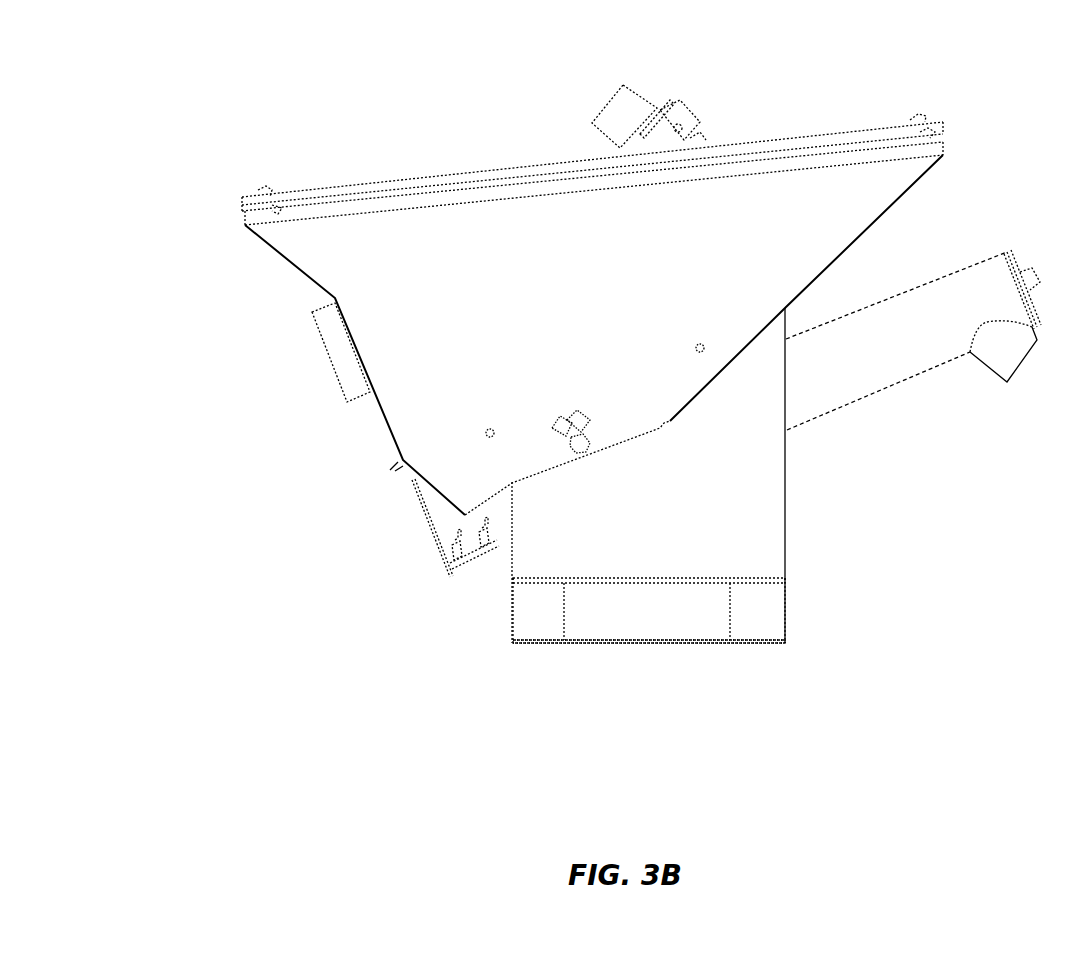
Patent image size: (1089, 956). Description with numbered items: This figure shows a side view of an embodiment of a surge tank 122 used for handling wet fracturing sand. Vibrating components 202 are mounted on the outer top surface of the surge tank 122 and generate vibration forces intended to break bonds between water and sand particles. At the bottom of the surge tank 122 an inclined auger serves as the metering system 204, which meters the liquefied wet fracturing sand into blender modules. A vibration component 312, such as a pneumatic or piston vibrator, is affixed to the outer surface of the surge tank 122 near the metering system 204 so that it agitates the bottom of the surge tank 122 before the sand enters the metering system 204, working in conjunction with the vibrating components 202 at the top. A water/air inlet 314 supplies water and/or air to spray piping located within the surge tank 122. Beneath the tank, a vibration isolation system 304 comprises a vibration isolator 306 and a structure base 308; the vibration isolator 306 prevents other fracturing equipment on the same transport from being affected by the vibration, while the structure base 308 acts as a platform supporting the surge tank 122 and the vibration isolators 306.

The surge tank 122 is at (385, 433).
The vibrating components 202 is at (588, 101).
The metering system 204 is at (931, 376).
The vibration isolation system 304 is at (787, 585).
The vibration isolator 306 is at (505, 580).
The structure base 308 is at (648, 642).
The vibration component 312 is at (588, 460).
The water/air inlet 314 is at (481, 428).